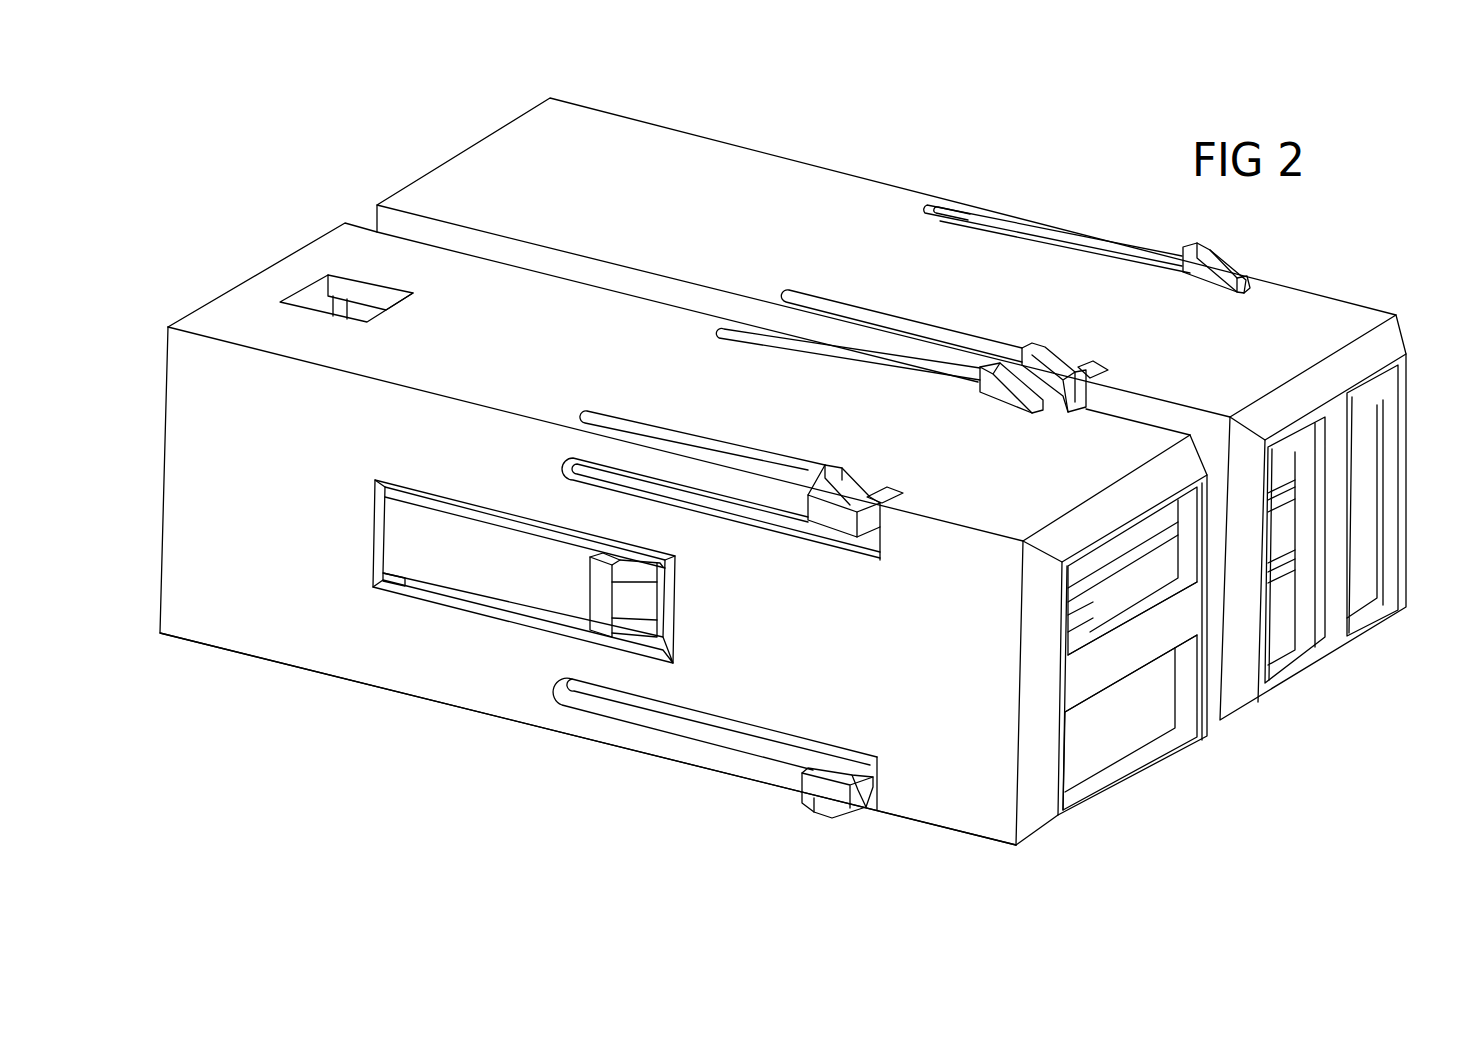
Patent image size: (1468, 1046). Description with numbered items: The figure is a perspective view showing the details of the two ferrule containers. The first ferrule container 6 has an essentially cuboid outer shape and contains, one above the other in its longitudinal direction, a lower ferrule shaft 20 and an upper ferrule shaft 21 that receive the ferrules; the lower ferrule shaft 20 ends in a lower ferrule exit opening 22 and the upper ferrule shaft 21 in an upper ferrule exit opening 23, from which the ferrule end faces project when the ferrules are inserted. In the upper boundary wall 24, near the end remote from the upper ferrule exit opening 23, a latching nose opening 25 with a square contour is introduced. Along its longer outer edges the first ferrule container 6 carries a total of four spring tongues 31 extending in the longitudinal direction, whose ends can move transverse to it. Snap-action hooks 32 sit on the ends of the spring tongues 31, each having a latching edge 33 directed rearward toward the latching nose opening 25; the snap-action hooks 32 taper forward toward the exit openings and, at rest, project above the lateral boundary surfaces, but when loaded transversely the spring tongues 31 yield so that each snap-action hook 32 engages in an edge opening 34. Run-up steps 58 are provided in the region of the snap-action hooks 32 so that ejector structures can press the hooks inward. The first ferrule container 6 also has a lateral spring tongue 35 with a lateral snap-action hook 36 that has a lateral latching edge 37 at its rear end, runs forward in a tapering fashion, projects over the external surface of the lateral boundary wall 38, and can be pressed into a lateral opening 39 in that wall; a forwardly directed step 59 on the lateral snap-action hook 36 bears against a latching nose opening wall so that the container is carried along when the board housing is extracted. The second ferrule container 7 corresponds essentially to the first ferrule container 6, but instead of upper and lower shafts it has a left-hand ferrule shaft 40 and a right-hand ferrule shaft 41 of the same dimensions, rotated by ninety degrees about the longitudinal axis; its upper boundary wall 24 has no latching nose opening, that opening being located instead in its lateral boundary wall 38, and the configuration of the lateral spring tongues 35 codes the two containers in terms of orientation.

The first ferrule container 6 is at (237, 595).
The second ferrule container 7 is at (614, 152).
The lower ferrule shaft 20 is at (1078, 755).
The upper ferrule shaft 21 is at (1126, 547).
The lower ferrule exit opening 22 is at (1185, 702).
The upper ferrule exit opening 23 is at (1085, 643).
The upper boundary wall 24 is at (243, 313).
The latching nose opening 25 is at (313, 290).
The spring tongue 31 is at (1087, 240).
The snap-action hook 32 is at (1213, 258).
The latching edge 33 is at (913, 365).
The edge opening 34 is at (927, 213).
The lateral spring tongue 35 is at (470, 560).
The lateral snap-action hook 36 is at (640, 597).
The lateral latching edge 37 is at (590, 580).
The lateral boundary wall 38 is at (425, 232).
The lateral opening 39 is at (455, 497).
The left-hand ferrule shaft 40 is at (1280, 626).
The right-hand ferrule shaft 41 is at (1360, 568).
The run-up step 58 is at (1083, 374).
The forwardly directed step 59 is at (620, 634).